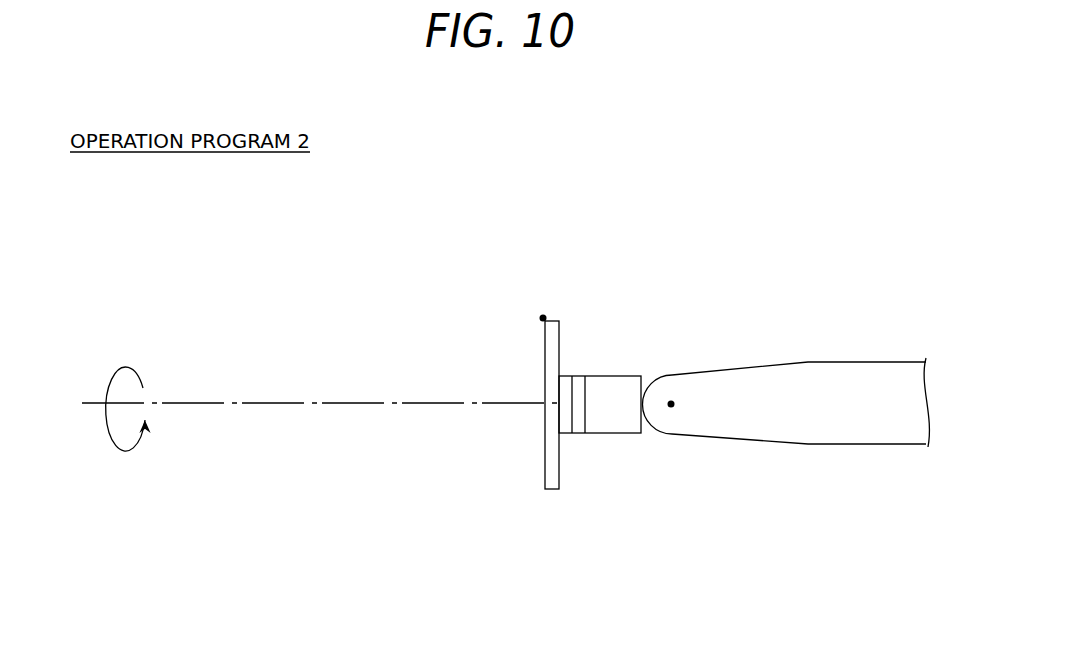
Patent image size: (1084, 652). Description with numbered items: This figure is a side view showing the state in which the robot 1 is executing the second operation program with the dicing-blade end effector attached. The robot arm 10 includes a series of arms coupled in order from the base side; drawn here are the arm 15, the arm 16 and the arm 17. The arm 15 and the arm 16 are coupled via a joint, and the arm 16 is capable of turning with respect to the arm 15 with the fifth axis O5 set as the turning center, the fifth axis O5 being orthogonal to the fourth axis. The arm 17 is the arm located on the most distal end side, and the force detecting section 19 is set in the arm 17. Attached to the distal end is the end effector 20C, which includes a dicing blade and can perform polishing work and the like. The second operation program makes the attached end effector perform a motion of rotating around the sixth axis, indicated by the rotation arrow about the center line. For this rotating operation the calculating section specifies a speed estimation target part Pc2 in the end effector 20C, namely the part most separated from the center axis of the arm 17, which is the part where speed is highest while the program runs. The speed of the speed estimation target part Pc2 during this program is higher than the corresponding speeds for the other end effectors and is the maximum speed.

The robot 1 is at (769, 212).
The robot arm 10 is at (870, 362).
The arm 15 is at (772, 403).
The arm 16 is at (663, 375).
The arm 17 is at (608, 383).
The force detecting section 19 is at (578, 383).
The end effector 20C is at (552, 478).
The fifth axis O5 is at (673, 406).
The speed estimation target part Pc2 is at (543, 317).